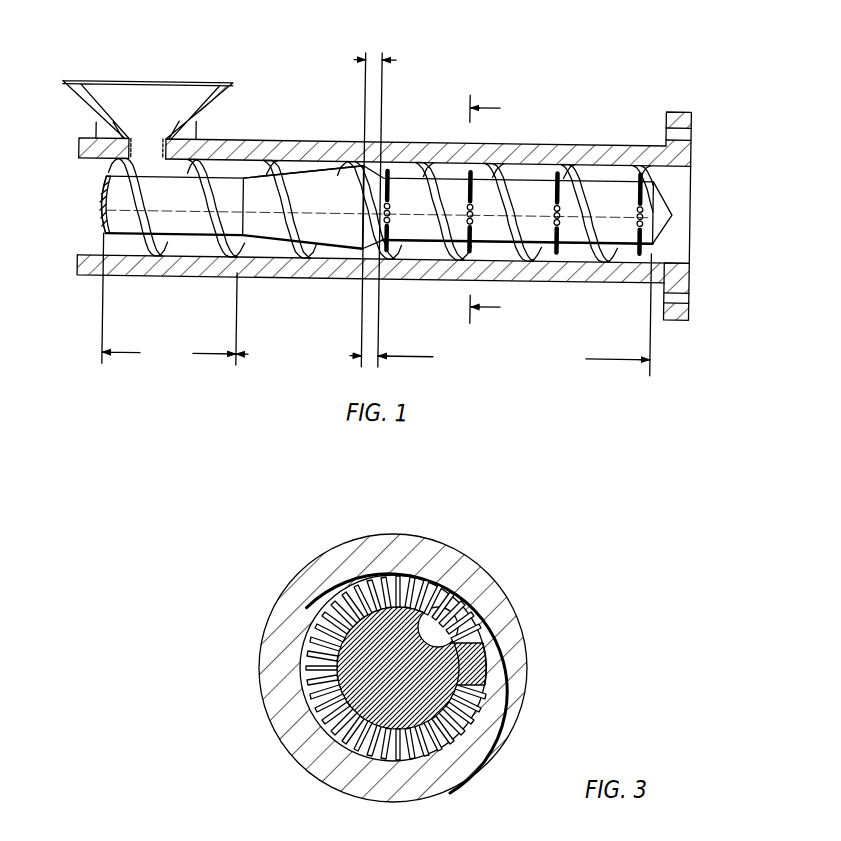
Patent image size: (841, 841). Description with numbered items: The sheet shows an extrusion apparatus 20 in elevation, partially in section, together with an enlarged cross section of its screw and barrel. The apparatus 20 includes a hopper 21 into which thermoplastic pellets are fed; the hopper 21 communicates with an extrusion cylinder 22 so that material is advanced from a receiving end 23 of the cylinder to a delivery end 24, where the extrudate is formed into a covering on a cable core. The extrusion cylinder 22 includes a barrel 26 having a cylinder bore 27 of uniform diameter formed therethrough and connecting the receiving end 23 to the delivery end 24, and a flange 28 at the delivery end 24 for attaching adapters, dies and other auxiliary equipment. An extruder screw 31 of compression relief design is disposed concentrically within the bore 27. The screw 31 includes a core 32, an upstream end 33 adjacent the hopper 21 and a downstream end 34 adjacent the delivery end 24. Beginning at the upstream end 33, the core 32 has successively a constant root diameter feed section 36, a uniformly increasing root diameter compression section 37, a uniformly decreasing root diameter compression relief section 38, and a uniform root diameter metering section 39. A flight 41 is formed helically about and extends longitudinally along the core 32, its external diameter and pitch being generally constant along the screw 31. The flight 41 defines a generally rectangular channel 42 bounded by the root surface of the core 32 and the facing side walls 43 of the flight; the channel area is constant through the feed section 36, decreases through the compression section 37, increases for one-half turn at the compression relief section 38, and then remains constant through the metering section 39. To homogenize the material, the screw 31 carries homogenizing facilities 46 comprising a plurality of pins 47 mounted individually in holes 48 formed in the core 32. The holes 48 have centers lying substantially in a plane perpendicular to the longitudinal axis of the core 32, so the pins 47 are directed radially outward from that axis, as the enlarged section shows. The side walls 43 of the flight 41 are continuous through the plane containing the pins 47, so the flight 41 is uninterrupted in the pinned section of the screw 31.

In FIG. 1, the extrusion apparatus 20 is at (296, 69).
In FIG. 1, the hopper 21 is at (222, 102).
In FIG. 1, the extrusion cylinder 22 is at (383, 232).
In FIG. 1, the receiving end 23 is at (390, 179).
In FIG. 1, the delivery end 24 is at (699, 216).
In FIG. 1, the barrel 26 is at (159, 273).
In FIG. 3, the barrel 26 is at (393, 682).
In FIG. 1, the cylinder bore 27 is at (681, 259).
In FIG. 1, the flange 28 is at (691, 290).
In FIG. 1, the extruder screw 31 is at (250, 178).
In FIG. 3, the extruder screw 31 is at (412, 670).
In FIG. 1, the core 32 is at (113, 218).
In FIG. 1, the upstream end 33 is at (102, 204).
In FIG. 1, the downstream end 34 is at (672, 211).
In FIG. 1, the feed section 36 is at (170, 307).
In FIG. 1, the compression section 37 is at (299, 362).
In FIG. 1, the compression relief section 38 is at (497, 212).
In FIG. 1, the metering section 39 is at (515, 316).
In FIG. 1, the flight 41 is at (289, 161).
In FIG. 3, the flight 41 is at (362, 748).
In FIG. 1, the channel 42 is at (201, 254).
In FIG. 1, the side walls of the flight 43 is at (635, 174).
In FIG. 3, the homogenizing facilities 46 is at (477, 717).
In FIG. 3, the pins 47 is at (462, 578).
In FIG. 3, the holes 48 is at (445, 636).